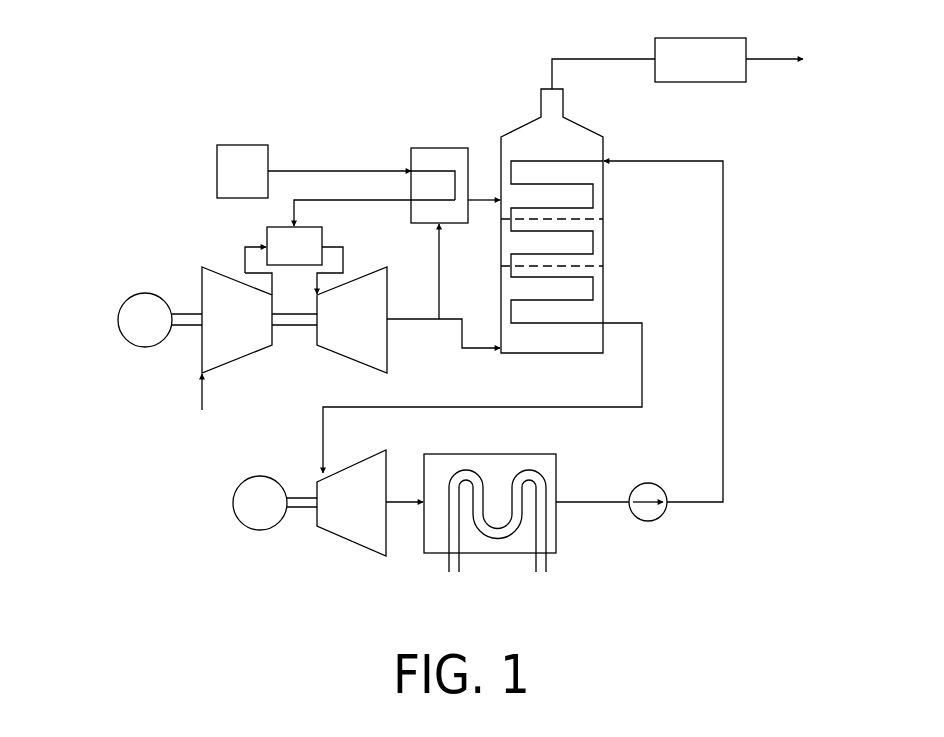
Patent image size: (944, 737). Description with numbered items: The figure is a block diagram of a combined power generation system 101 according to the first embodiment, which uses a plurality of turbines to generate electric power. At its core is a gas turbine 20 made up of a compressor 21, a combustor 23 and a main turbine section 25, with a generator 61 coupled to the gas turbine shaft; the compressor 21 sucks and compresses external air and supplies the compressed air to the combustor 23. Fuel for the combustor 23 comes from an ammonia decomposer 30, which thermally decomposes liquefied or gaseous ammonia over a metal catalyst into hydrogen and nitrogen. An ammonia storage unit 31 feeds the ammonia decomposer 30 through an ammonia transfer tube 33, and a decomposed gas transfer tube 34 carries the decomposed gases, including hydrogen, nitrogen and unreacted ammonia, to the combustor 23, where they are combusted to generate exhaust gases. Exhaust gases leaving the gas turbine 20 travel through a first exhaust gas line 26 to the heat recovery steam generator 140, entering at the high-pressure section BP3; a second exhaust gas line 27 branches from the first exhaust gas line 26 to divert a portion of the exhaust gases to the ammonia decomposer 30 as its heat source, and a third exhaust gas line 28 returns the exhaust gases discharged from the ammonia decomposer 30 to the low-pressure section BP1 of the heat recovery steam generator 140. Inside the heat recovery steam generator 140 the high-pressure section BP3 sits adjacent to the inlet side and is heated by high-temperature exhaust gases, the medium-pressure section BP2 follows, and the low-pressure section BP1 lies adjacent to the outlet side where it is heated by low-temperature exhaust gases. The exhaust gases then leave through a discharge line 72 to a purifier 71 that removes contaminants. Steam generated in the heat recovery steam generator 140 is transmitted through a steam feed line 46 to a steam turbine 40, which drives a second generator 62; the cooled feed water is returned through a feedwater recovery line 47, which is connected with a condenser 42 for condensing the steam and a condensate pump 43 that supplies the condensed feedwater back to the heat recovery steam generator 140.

The combined power generation system 101 is at (367, 90).
The gas turbine 20 is at (226, 233).
The compressor 21 is at (240, 358).
The combustor 23 is at (322, 238).
The main turbine section 25 is at (352, 358).
The first exhaust gas line 26 is at (470, 350).
The second exhaust gas line 27 is at (438, 288).
The third exhaust gas line 28 is at (478, 202).
The ammonia decomposer 30 is at (440, 148).
The ammonia storage unit 31 is at (245, 145).
The ammonia transfer tube 33 is at (326, 170).
The decomposed gas transfer tube 34 is at (373, 199).
The heat recovery steam generator 140 is at (591, 120).
The low-pressure section BP1 is at (605, 192).
The medium-pressure section BP2 is at (605, 241).
The high-pressure section BP3 is at (605, 292).
The discharge line 72 is at (600, 58).
The purifier 71 is at (725, 38).
The steam turbine 40 is at (346, 540).
The condenser 42 is at (490, 553).
The condensate pump 43 is at (648, 521).
The steam feed line 46 is at (587, 408).
The feedwater recovery line 47 is at (725, 387).
The generator 61 is at (142, 347).
The generator 62 is at (237, 497).